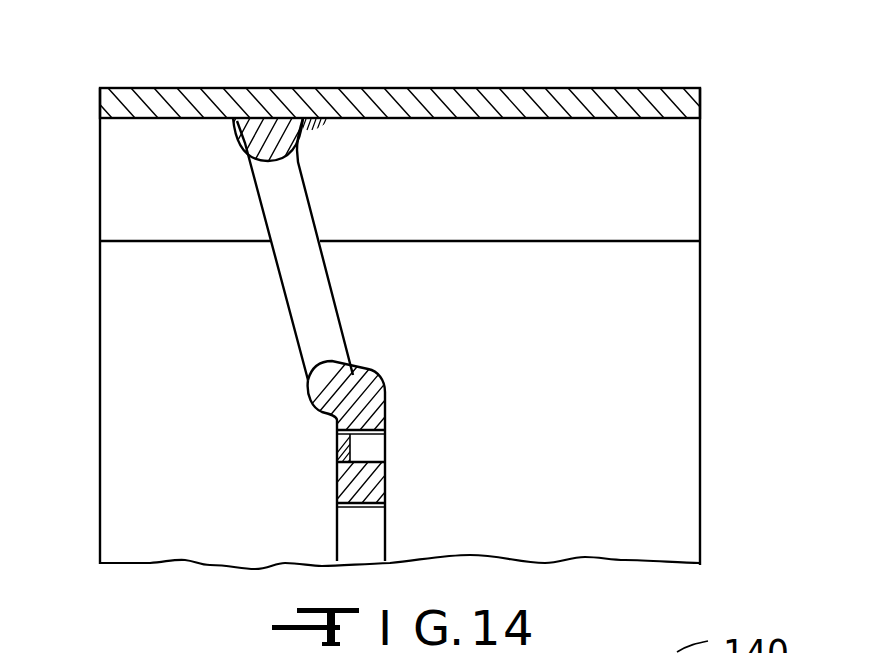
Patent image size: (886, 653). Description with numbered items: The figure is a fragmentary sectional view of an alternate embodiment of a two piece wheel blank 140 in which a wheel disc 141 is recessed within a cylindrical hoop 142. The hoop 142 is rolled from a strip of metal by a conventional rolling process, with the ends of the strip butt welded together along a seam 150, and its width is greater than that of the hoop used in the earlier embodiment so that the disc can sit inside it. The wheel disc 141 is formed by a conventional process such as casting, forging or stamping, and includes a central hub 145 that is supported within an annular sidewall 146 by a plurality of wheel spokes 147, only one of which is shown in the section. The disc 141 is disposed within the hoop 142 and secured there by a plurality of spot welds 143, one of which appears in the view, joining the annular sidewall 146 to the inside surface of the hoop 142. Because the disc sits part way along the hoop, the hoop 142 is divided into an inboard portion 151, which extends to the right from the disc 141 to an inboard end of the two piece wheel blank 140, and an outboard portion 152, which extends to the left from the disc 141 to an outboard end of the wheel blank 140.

The two piece wheel blank 140 is at (410, 284).
The wheel disc 141 is at (380, 339).
The cylindrical hoop 142 is at (397, 100).
The spot welds 143 is at (304, 121).
The central hub 145 is at (367, 410).
The annular sidewall 146 is at (268, 141).
The wheel spokes 147 is at (297, 213).
The seam 150 is at (510, 241).
The inboard portion 151 is at (657, 408).
The outboard portion 152 is at (123, 417).